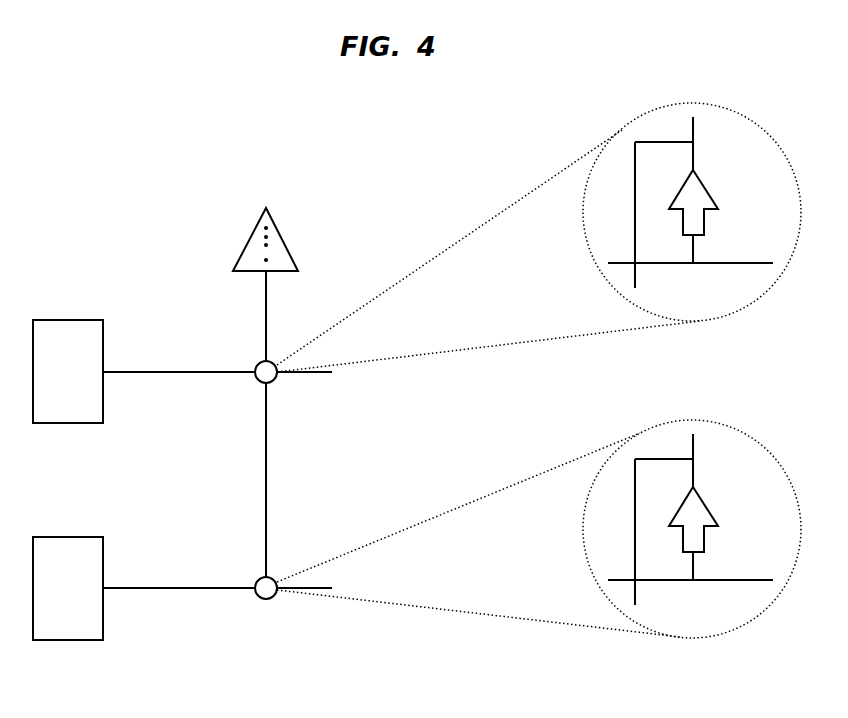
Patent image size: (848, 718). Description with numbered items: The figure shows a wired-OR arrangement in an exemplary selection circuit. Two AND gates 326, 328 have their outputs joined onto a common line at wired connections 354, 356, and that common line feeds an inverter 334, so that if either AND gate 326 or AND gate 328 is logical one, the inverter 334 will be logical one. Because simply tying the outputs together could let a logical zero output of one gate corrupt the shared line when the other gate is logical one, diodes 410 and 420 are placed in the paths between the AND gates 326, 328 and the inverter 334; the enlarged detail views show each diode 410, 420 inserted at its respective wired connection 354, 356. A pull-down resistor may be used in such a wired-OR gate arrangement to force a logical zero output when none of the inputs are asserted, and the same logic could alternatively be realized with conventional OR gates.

The AND gate 326 is at (103, 336).
The AND gate 328 is at (103, 553).
The inverter 334 is at (273, 222).
The wired connection 354 is at (273, 380).
The wired connection 356 is at (273, 596).
The diode 410 is at (700, 178).
The diode 420 is at (700, 495).